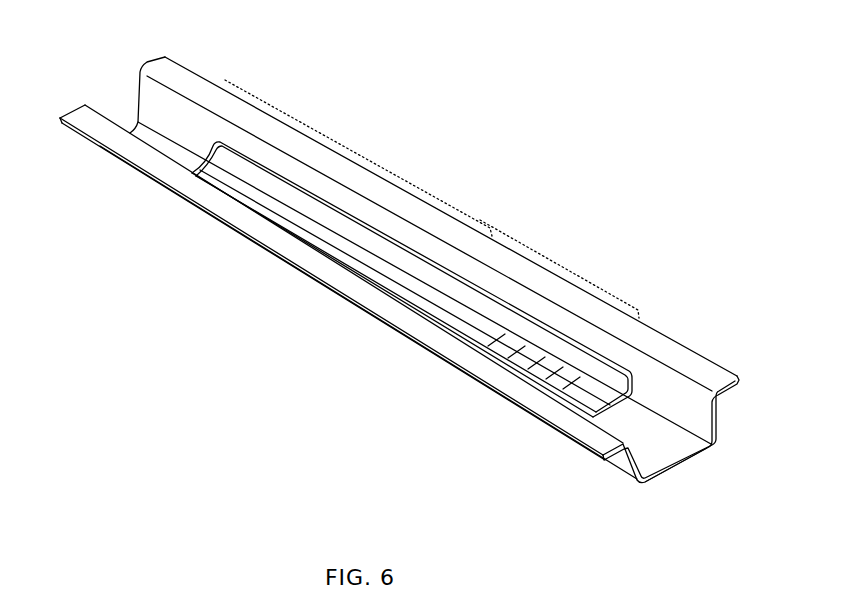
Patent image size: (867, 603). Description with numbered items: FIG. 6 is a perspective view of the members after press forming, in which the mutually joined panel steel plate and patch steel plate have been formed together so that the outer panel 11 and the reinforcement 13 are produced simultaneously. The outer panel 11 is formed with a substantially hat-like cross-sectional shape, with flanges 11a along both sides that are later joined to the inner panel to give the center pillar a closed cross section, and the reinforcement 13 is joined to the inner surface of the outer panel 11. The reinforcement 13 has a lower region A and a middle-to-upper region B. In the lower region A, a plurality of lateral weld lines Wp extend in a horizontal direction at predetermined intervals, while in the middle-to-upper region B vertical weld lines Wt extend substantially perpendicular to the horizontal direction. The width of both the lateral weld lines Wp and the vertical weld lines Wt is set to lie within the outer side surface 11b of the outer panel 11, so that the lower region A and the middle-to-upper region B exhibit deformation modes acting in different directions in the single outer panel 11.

The outer panel 11 is at (618, 462).
The flanges 11a is at (175, 178).
The outer side surface 11b is at (670, 477).
The reinforcement 13 is at (598, 398).
The vertical weld lines Wt is at (284, 232).
The lateral weld lines Wp is at (564, 389).
The lower region A is at (559, 269).
The middle-to-upper region B is at (358, 158).